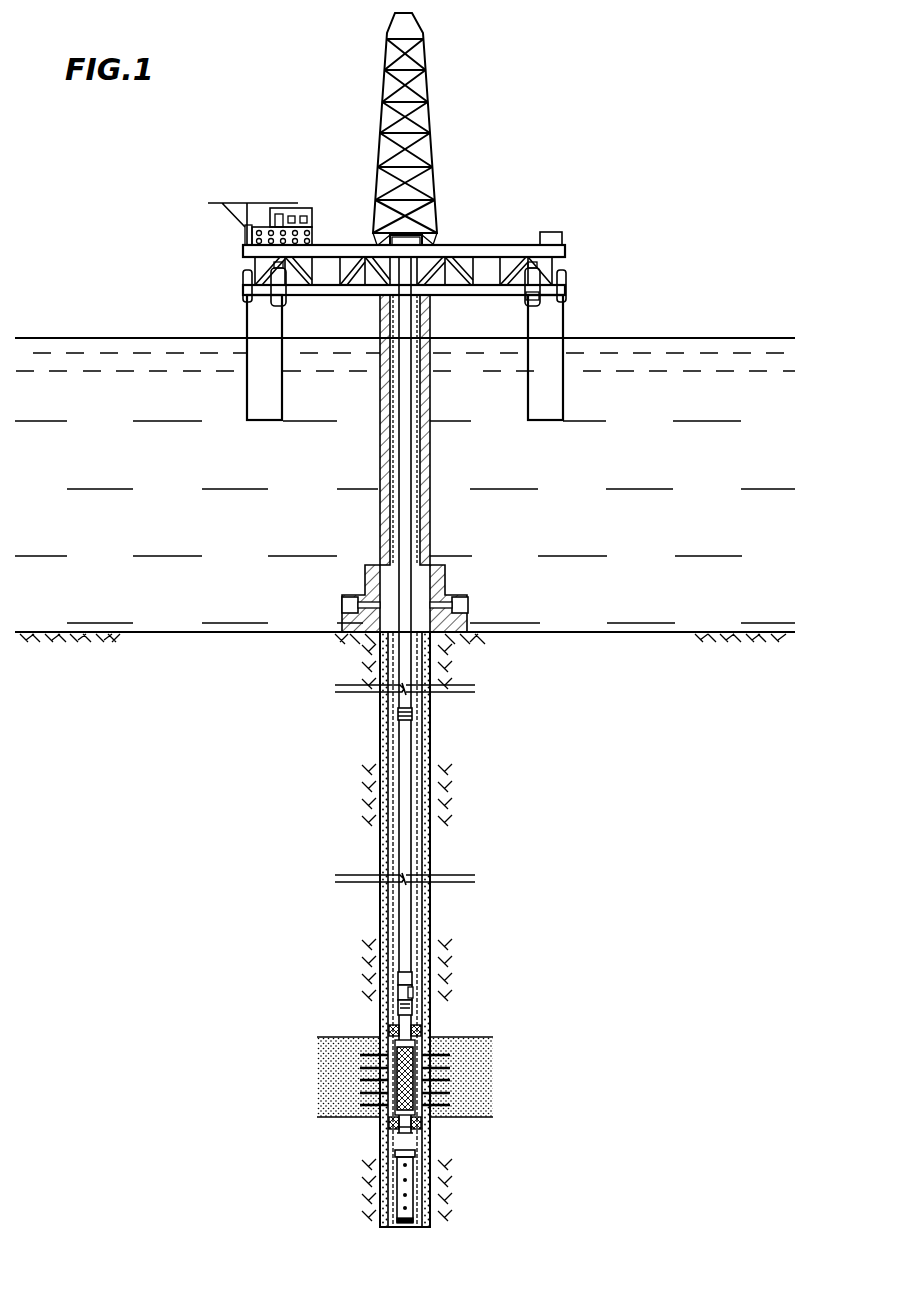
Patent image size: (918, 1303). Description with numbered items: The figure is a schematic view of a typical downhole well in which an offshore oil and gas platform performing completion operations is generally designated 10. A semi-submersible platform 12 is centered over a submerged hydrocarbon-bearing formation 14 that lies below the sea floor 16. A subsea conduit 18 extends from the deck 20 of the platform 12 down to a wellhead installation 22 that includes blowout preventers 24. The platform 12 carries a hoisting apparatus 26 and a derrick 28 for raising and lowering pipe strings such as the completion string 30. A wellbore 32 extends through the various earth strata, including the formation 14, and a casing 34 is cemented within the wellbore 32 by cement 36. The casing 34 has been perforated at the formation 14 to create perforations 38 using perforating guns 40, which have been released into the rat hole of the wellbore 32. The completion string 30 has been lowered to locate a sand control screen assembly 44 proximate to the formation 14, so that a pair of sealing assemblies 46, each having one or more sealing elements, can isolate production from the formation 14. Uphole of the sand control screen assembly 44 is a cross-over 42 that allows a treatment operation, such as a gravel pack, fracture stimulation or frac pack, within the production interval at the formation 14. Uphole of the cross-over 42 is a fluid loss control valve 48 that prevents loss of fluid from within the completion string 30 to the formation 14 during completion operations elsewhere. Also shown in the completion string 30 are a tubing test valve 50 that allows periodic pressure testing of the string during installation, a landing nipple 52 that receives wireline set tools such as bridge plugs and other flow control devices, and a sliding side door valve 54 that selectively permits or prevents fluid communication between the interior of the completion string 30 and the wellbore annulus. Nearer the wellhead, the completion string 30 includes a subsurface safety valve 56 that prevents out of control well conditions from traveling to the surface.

The offshore oil and gas platform 10 is at (612, 196).
The semi-submersible platform 12 is at (565, 265).
The hydrocarbon-bearing formation 14 is at (477, 1077).
The sea floor 16 is at (726, 637).
The subsea conduit 18 is at (380, 457).
The deck 20 is at (520, 300).
The wellhead installation 22 is at (437, 573).
The blowout preventers 24 is at (455, 604).
The hoisting apparatus 26 is at (405, 233).
The derrick 28 is at (430, 57).
The completion string 30 is at (402, 732).
The wellbore 32 is at (380, 750).
The casing 34 is at (380, 766).
The cement 36 is at (370, 802).
The perforations 38 is at (447, 1053).
The perforating guns 40 is at (397, 1175).
The cross-over 42 is at (402, 1037).
The sand control screen assembly 44 is at (403, 1073).
The sealing assemblies 46 is at (393, 1030).
The fluid loss control valve 48 is at (412, 1012).
The tubing test valve 50 is at (403, 1000).
The landing nipple 52 is at (410, 992).
The sliding side door valve 54 is at (403, 980).
The safety valve 56 is at (410, 712).